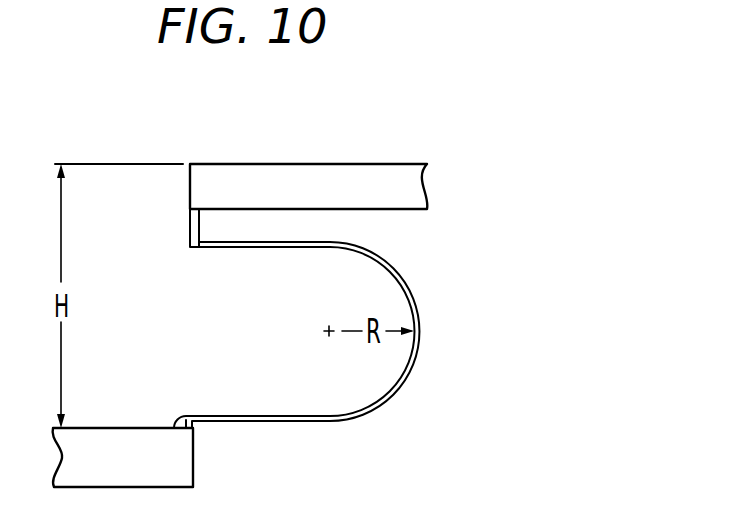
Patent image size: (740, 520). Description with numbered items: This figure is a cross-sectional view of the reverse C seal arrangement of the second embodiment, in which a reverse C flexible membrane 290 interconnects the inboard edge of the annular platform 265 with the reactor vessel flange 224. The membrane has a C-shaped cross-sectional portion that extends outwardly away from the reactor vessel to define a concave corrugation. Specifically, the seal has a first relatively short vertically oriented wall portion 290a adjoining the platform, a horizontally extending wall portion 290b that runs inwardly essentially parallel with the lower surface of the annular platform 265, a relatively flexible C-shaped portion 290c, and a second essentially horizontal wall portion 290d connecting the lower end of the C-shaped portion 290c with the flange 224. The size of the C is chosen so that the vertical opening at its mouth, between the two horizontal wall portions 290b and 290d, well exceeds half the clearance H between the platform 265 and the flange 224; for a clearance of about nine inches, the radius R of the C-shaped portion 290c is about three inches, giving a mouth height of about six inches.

The annular platform 265 is at (323, 163).
The reactor vessel flange 224 is at (178, 470).
The reverse C flexible membrane 290 is at (303, 318).
The first vertically oriented wall portion 290a is at (189, 227).
The horizontally extending wall portion 290b is at (235, 248).
The C-shaped portion 290c is at (402, 380).
The second essentially horizontal wall portion 290d is at (272, 415).